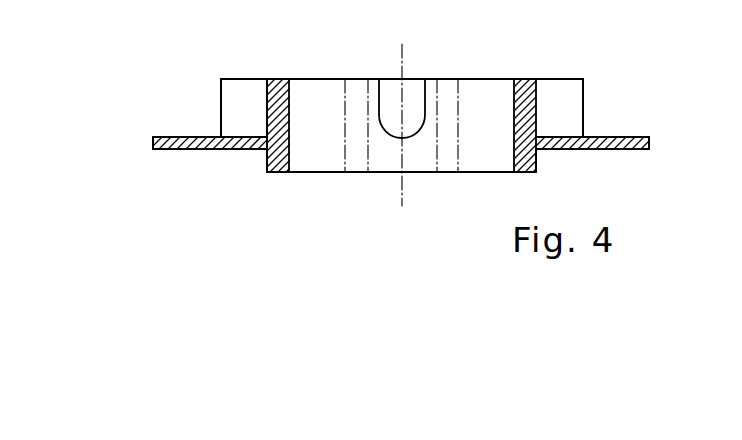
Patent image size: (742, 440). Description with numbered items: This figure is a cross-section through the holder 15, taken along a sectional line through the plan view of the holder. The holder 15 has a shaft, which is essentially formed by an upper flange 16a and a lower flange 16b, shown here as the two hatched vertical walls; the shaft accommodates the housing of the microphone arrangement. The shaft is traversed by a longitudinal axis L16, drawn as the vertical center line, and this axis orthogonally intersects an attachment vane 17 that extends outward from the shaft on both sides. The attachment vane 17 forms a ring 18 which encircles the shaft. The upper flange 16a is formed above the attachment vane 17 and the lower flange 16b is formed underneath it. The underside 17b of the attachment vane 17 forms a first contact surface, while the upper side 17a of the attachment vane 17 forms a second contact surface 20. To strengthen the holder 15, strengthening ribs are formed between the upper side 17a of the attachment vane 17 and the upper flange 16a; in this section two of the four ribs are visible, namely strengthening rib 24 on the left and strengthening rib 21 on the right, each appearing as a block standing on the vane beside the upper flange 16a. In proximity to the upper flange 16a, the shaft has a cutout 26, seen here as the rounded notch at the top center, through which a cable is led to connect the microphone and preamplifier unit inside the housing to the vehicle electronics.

The holder 15 is at (193, 91).
The strengthening rib 24 is at (243, 94).
The upper flange 16a is at (277, 96).
The lower flange 16b is at (283, 173).
The cutout 26 is at (388, 105).
The longitudinal axis of the shaft L16 is at (404, 62).
The strengthening rib 21 is at (551, 93).
The upper side of the attachment vane 17a is at (589, 136).
The second contact surface 20 is at (611, 132).
The attachment vane 17 is at (624, 132).
The ring 18 is at (641, 130).
The underside of the attachment vane 17b is at (590, 150).